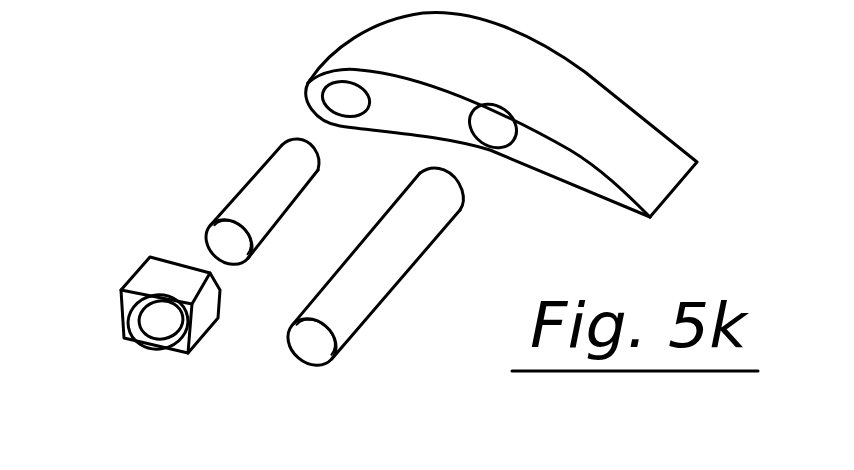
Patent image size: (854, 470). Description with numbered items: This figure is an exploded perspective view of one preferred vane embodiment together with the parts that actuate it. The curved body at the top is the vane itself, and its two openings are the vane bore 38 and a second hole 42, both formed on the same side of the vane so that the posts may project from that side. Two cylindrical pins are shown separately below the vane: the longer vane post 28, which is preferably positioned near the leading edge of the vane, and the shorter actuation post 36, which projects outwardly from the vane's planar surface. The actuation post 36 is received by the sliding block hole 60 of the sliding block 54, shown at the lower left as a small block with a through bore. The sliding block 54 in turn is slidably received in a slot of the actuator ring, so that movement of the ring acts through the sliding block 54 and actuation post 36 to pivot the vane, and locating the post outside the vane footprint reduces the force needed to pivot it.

The vane post 28 is at (398, 265).
The actuation post 36 is at (260, 187).
The vane bore 38 is at (495, 138).
The hole in curved bracket 42 is at (343, 97).
The sliding block 54 is at (135, 311).
The sliding block hole 60 is at (158, 321).